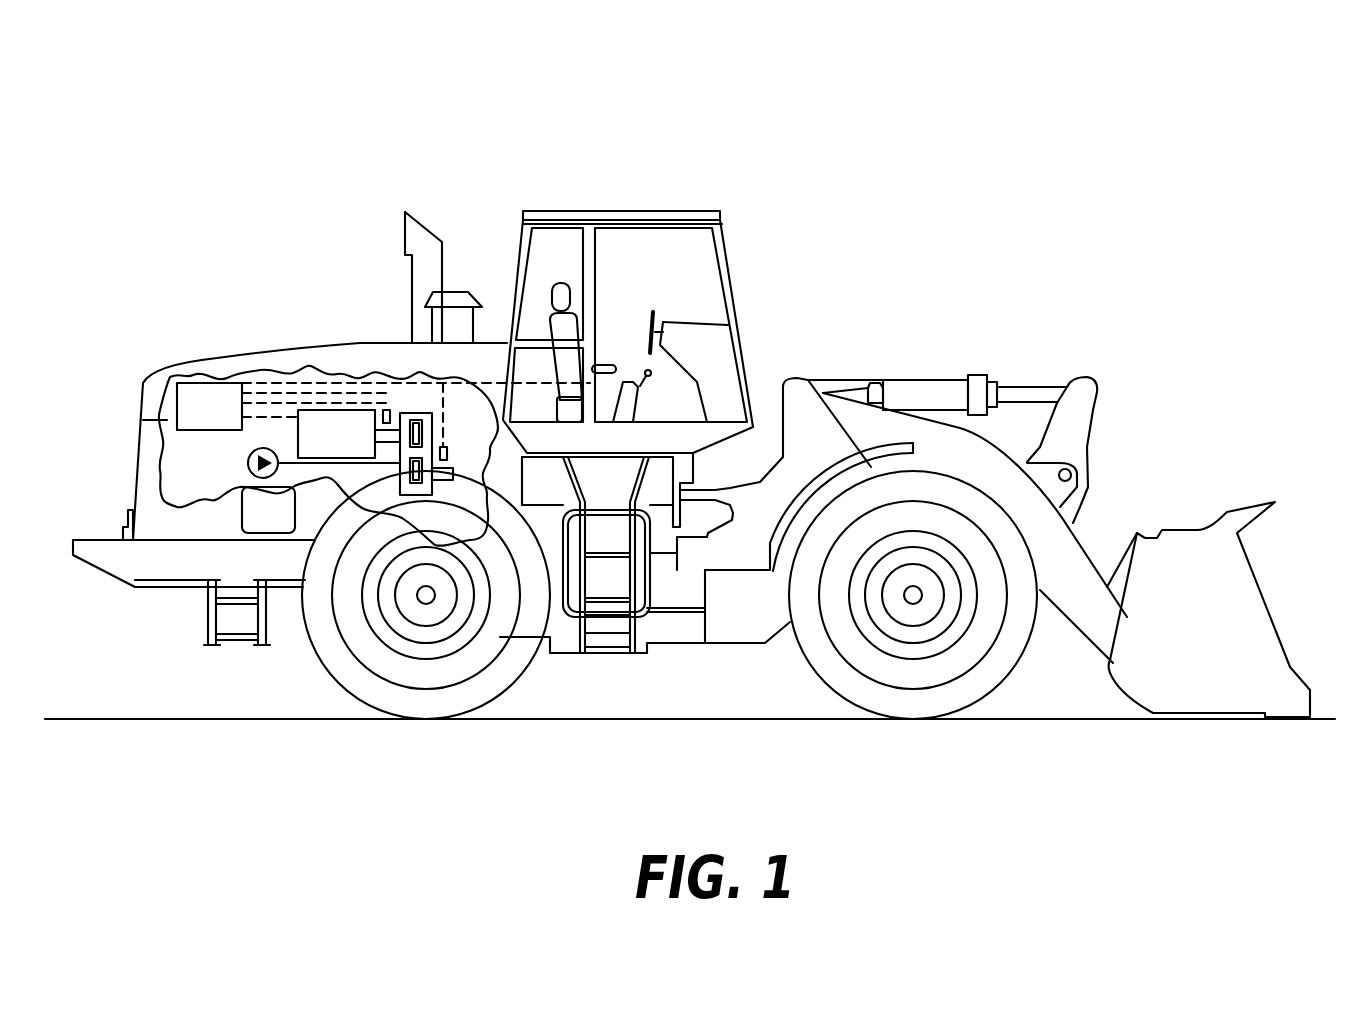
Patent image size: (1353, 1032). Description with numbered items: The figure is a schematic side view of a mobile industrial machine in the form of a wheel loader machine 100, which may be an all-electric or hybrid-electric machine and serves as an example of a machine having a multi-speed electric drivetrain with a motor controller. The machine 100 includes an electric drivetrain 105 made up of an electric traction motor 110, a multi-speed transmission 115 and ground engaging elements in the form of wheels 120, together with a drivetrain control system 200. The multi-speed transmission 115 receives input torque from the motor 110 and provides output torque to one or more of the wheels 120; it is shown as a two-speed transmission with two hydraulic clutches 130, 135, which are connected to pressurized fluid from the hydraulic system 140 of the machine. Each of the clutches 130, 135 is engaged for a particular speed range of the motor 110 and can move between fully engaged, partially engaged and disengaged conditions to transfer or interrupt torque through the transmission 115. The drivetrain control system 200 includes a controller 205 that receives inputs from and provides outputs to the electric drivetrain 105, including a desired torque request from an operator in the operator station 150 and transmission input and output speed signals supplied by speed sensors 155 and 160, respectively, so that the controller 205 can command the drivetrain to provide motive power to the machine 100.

The wheel loader machine 100 is at (775, 223).
The electric drivetrain 105 is at (343, 374).
The electric traction motor 110 is at (322, 446).
The multi-speed transmission 115 is at (417, 503).
The wheels 120 is at (390, 708).
The hydraulic clutch 130 is at (423, 478).
The hydraulic clutch 135 is at (414, 412).
The hydraulic system 140 is at (160, 497).
The operator station 150 is at (593, 122).
The speed sensor 155 is at (386, 408).
The speed sensor 160 is at (448, 460).
The drivetrain control system 200 is at (254, 299).
The controller 205 is at (198, 383).